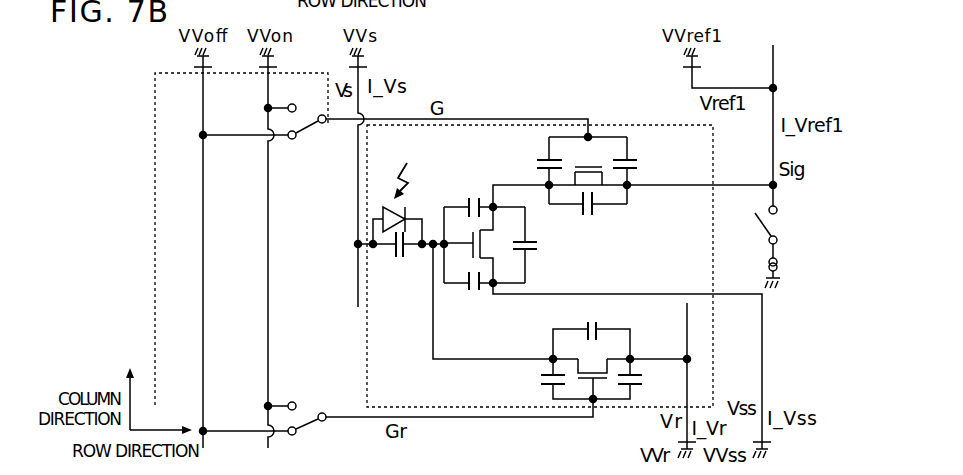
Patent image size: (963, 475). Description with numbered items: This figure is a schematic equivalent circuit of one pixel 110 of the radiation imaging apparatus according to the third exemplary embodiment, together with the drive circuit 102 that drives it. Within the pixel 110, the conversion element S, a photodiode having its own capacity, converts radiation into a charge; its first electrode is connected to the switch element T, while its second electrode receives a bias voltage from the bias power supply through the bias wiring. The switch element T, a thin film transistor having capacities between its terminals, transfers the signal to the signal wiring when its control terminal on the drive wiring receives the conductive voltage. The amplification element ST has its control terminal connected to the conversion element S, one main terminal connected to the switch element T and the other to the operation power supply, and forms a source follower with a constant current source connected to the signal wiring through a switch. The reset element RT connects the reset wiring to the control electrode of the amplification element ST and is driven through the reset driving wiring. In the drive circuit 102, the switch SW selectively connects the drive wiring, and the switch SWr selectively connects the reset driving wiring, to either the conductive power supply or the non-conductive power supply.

The drive circuit 102 is at (155, 107).
The pixel 110 is at (507, 408).
The switch SW is at (263, 135).
The switch SWr is at (263, 432).
The conversion element S is at (395, 203).
The amplification element ST is at (476, 245).
The switch element T is at (588, 177).
The reset element RT is at (592, 372).